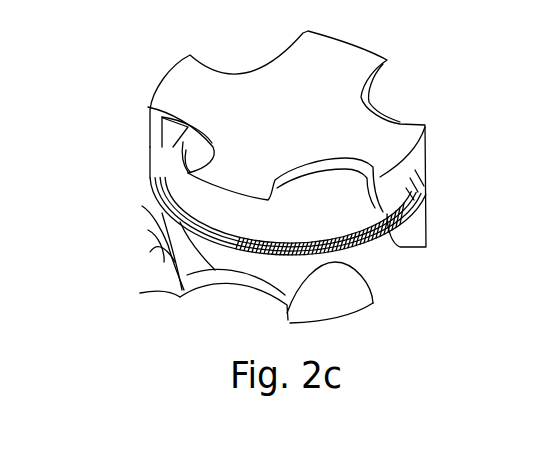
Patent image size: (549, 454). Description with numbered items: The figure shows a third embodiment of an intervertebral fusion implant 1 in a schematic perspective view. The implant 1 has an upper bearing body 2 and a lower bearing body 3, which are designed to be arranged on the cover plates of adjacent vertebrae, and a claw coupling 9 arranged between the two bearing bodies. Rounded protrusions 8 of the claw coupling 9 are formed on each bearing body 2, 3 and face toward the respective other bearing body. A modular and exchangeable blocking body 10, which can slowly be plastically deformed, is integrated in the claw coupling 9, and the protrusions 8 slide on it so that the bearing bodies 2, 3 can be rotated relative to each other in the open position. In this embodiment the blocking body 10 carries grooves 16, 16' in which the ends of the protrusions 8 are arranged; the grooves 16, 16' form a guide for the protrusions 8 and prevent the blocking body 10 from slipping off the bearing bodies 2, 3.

The intervertebral fusion implant 1 is at (420, 68).
The upper bearing body 2 is at (330, 70).
The lower bearing body 3 is at (227, 277).
The protrusions 8 is at (415, 183).
The claw coupling 9 is at (152, 253).
The blocking body 10 is at (220, 228).
The groove 16 is at (261, 212).
The groove 16' is at (256, 216).